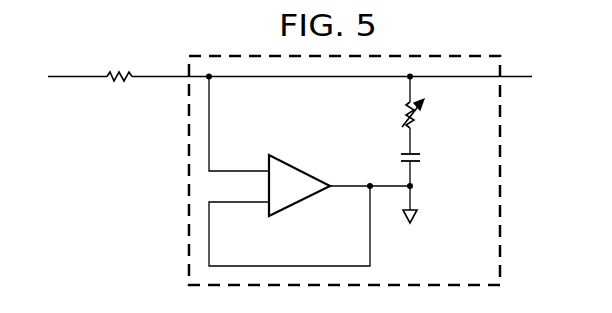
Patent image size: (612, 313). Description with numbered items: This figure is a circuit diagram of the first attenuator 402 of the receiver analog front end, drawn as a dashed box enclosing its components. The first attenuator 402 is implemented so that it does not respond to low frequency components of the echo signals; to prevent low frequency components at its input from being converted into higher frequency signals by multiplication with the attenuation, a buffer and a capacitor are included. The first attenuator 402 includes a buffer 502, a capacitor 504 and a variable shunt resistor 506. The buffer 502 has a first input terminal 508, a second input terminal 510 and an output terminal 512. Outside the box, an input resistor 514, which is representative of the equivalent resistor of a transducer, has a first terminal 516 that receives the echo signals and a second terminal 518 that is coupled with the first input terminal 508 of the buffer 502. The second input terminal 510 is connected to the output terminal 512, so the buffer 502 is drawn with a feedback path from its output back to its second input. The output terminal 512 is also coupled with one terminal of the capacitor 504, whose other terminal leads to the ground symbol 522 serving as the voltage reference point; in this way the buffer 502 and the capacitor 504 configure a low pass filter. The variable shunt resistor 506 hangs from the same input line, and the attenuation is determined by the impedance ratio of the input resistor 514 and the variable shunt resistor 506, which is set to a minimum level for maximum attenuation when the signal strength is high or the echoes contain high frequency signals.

The first attenuator 402 is at (184, 187).
The buffer 502 is at (304, 208).
The capacitor 504 is at (422, 156).
The variable shunt resistor 506 is at (425, 117).
The first input terminal 508 is at (258, 170).
The second input terminal 510 is at (250, 204).
The output terminal 512 is at (352, 183).
The input resistor 514 is at (118, 63).
The first terminal 516 is at (78, 79).
The second terminal 518 is at (158, 79).
The ground 522 is at (421, 221).